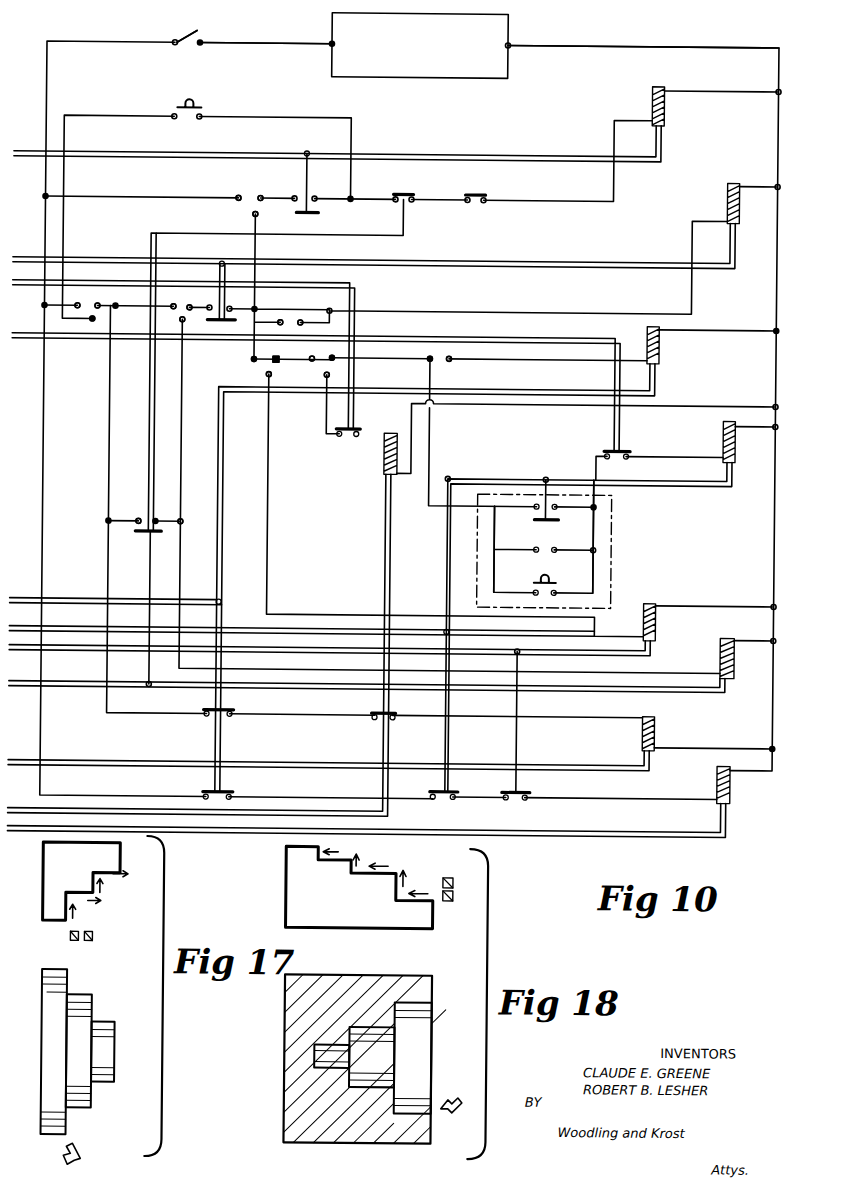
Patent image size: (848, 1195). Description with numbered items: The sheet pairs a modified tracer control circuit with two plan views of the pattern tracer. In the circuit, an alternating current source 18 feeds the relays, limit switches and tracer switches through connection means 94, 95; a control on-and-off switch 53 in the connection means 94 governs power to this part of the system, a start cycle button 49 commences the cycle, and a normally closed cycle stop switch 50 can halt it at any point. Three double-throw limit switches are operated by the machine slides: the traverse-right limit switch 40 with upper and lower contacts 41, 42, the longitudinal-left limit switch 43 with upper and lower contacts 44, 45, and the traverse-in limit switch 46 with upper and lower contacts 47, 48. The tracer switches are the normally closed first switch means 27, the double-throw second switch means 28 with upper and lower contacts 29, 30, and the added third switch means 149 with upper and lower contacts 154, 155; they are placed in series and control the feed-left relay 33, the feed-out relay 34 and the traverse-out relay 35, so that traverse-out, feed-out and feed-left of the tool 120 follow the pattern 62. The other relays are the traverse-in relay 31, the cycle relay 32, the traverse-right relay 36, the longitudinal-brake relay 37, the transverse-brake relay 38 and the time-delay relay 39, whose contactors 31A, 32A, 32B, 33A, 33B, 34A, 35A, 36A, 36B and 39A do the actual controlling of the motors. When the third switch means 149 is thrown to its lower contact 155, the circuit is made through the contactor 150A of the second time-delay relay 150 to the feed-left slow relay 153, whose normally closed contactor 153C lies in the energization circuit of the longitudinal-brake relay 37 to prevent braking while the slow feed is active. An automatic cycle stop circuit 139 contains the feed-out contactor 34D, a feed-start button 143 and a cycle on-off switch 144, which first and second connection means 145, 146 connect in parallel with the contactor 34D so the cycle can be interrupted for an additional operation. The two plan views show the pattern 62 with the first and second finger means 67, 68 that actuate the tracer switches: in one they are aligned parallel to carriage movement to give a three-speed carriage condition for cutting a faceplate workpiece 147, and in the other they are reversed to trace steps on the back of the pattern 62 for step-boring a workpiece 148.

In FIG. 10, the alternating current source 18 is at (510, 58).
In FIG. 10, the first tracer switch 27 is at (444, 360).
In FIG. 10, the second tracer switch 28 is at (253, 358).
In FIG. 10, the upper contact 29 is at (280, 344).
In FIG. 10, the lower contact 30 is at (268, 373).
In FIG. 10, the traverse-in relay 31 is at (665, 104).
In FIG. 10, the cycle relay 32 is at (741, 200).
In FIG. 10, the feed-left relay 33 is at (662, 345).
In FIG. 10, the feed-out relay 34 is at (739, 438).
In FIG. 10, the traverse-out relay 35 is at (661, 622).
In FIG. 10, the traverse-right relay 36 is at (740, 657).
In FIG. 10, the longitudinal-brake relay 37 is at (661, 730).
In FIG. 10, the transverse-brake relay 38 is at (737, 786).
In FIG. 10, the time-delay relay 39 is at (315, 384).
In FIG. 10, the contactor 31A is at (313, 213).
In FIG. 10, the contactor 32A is at (478, 188).
In FIG. 10, the contactor 32B is at (235, 322).
In FIG. 10, the contactor 33A is at (246, 702).
In FIG. 10, the contactor 33B is at (238, 788).
In FIG. 10, the contactor 34A is at (462, 786).
In FIG. 10, the feed-out contactor 34D is at (541, 518).
In FIG. 10, the contactor 35A is at (534, 786).
In FIG. 10, the contactor 36A is at (410, 180).
In FIG. 10, the contactor 36B is at (148, 534).
In FIG. 10, the contactor 39A is at (624, 443).
In FIG. 10, the traverse-right limit switch 40 is at (82, 290).
In FIG. 10, the upper contact 41 is at (100, 299).
In FIG. 10, the lower contact 42 is at (95, 321).
In FIG. 10, the longitudinal-left limit switch 43 is at (176, 299).
In FIG. 10, the upper contact 44 is at (192, 300).
In FIG. 10, the lower contact 45 is at (183, 320).
In FIG. 10, the traverse-in limit switch 46 is at (241, 180).
In FIG. 10, the upper contact 47 is at (262, 190).
In FIG. 10, the lower contact 48 is at (250, 212).
In FIG. 10, the start cycle button 49 is at (180, 100).
In FIG. 10, the cycle stop switch 50 is at (300, 324).
In FIG. 10, the control on-and-off switch 53 is at (190, 26).
In FIG. 17, the pattern 62 is at (128, 852).
In FIG. 18, the pattern 62 is at (371, 925).
In FIG. 17, the first finger means 67 is at (77, 936).
In FIG. 18, the first finger means 67 is at (459, 898).
In FIG. 17, the second finger means 68 is at (102, 936).
In FIG. 18, the second finger means 68 is at (458, 872).
In FIG. 10, the connection means 94 is at (246, 47).
In FIG. 10, the connection means 95 is at (606, 54).
In FIG. 17, the tool 120 is at (88, 1148).
In FIG. 18, the tool 120 is at (470, 1086).
In FIG. 10, the automatic cycle stop circuit 139 is at (616, 560).
In FIG. 10, the feed-start button 143 is at (557, 573).
In FIG. 10, the cycle on-off switch 144 is at (553, 541).
In FIG. 10, the first connection means 145 is at (499, 572).
In FIG. 10, the second connection means 146 is at (598, 520).
In FIG. 17, the workpiece 147 is at (101, 1003).
In FIG. 18, the workpiece 148 is at (420, 972).
In FIG. 10, the third switch means 149 is at (316, 344).
In FIG. 10, the relay conductor 150 is at (180, 345).
In FIG. 10, the time delay relay contactor 150A is at (352, 434).
In FIG. 10, the feed-left slow relay 153 is at (386, 470).
In FIG. 10, the contactor 153C is at (402, 708).
In FIG. 10, the upper contact 154 is at (338, 352).
In FIG. 10, the lower contact 155 is at (326, 373).